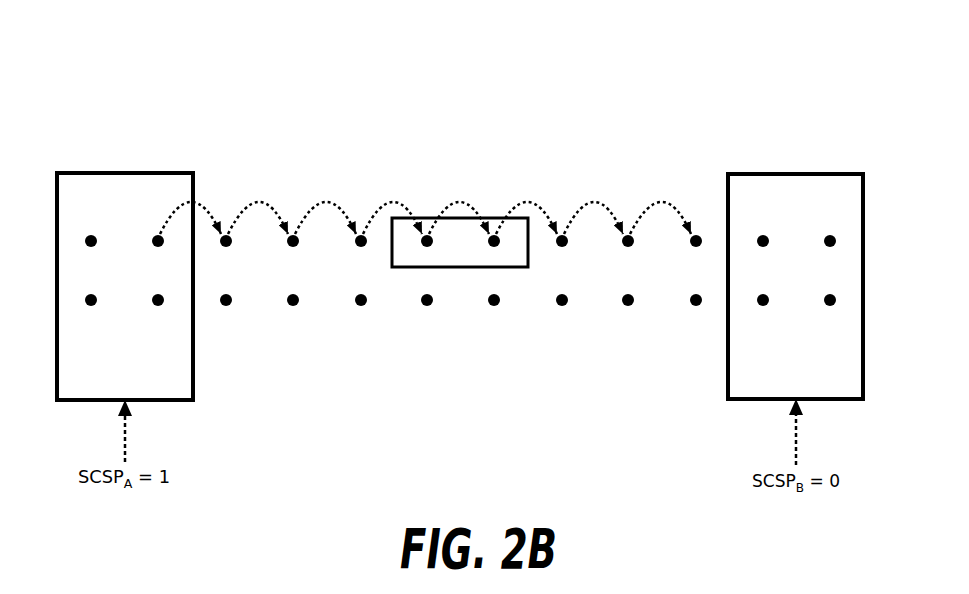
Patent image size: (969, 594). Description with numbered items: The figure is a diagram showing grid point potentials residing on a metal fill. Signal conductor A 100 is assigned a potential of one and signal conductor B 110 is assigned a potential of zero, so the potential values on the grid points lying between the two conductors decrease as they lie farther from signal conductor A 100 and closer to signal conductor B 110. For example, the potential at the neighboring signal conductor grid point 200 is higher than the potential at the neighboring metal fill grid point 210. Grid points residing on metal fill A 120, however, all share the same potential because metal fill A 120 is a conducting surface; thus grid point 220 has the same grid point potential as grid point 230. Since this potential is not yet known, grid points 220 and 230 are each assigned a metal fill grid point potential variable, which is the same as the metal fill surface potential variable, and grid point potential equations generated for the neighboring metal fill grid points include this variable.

The signal conductor A 100 is at (148, 173).
The signal conductor B 110 is at (755, 174).
The metal fill A 120 is at (421, 230).
The neighboring signal conductor grid point 200 is at (228, 247).
The neighboring metal fill grid point 210 is at (359, 236).
The grid point 220 is at (429, 237).
The grid point 230 is at (496, 236).